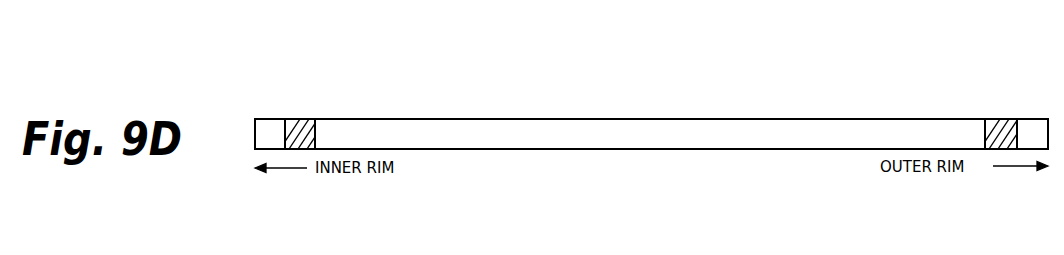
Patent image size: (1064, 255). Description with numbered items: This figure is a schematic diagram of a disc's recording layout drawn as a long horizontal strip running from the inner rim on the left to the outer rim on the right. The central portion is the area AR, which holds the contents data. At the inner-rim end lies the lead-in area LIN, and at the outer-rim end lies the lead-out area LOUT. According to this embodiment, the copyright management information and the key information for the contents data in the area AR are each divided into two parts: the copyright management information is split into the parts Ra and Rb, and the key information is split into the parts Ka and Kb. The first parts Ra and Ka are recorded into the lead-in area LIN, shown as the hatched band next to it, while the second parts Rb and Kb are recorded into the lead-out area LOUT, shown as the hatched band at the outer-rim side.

The lead-in area LIN is at (270, 127).
The copyright management information Ra is at (320, 110).
The key information Ka is at (302, 127).
The area AR is at (650, 123).
The copyright management information Rb is at (984, 110).
The key information Kb is at (993, 125).
The lead-out area LOUT is at (1031, 125).